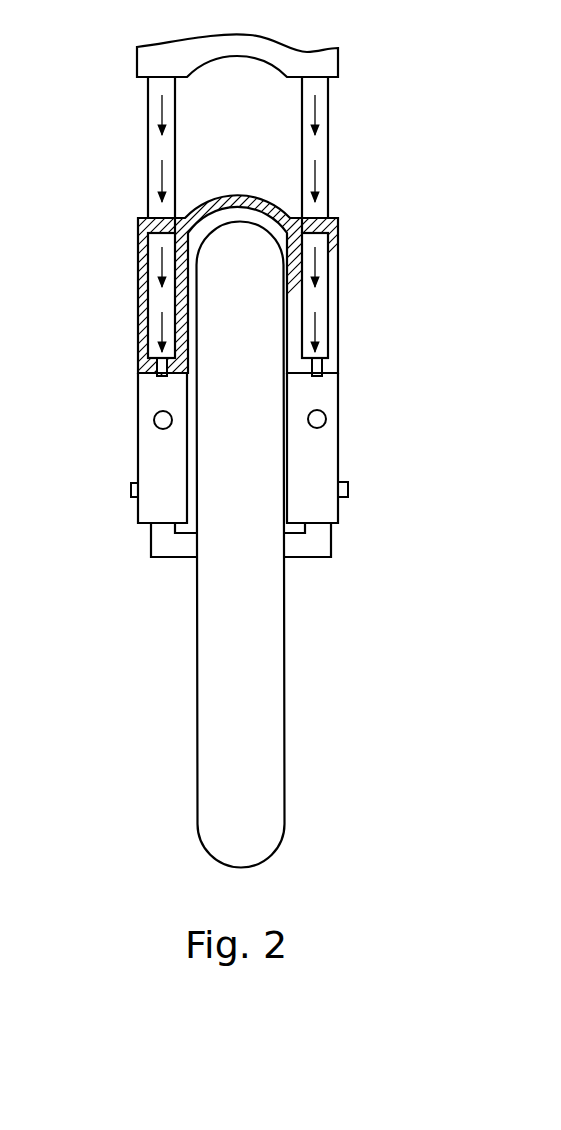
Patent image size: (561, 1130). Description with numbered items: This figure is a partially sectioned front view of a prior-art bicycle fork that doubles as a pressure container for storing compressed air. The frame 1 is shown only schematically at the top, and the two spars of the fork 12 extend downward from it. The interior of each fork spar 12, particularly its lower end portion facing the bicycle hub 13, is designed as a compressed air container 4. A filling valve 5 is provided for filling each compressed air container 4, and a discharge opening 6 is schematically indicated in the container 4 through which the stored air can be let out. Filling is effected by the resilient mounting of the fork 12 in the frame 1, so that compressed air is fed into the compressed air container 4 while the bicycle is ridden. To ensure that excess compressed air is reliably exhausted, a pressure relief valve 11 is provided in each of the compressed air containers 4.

The frame 1 is at (98, 230).
The spars of the fork 12 is at (118, 168).
The compressed air container 4 is at (165, 465).
The filling valve 5 is at (158, 369).
The pressure relief valve 11 is at (163, 420).
The discharge opening 6 is at (130, 490).
The bicycle hub 13 is at (173, 543).